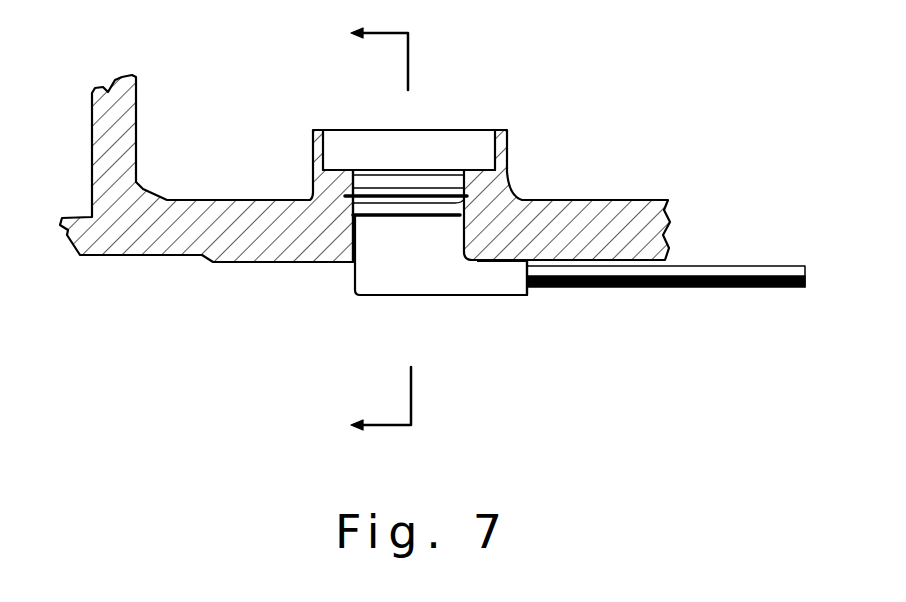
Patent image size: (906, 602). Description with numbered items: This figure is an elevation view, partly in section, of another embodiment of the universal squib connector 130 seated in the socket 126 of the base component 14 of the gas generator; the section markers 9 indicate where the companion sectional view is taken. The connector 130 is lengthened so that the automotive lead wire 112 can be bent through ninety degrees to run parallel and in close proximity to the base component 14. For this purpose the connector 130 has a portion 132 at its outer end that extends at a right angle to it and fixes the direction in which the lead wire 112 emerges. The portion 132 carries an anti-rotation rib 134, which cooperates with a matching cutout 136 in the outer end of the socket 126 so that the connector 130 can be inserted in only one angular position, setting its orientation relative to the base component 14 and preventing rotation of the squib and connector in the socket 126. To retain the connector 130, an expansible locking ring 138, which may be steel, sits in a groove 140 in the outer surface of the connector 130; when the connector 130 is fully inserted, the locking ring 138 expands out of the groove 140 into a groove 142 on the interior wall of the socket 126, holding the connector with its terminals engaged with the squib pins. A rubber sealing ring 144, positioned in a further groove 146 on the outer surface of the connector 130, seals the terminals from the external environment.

The base component 14 is at (210, 261).
The lead wire 112 is at (745, 288).
The socket 126 is at (367, 235).
The universal squib connector 130 is at (442, 280).
The portion 132 is at (522, 298).
The anti-rotation rib 134 is at (478, 243).
The cutout 136 is at (477, 258).
The locking ring 138 is at (362, 197).
The groove 140 is at (430, 192).
The groove 142 is at (463, 190).
The rubber sealing ring 144 is at (468, 226).
The groove 146 is at (393, 218).
The section line 9- 9 is at (366, 236).